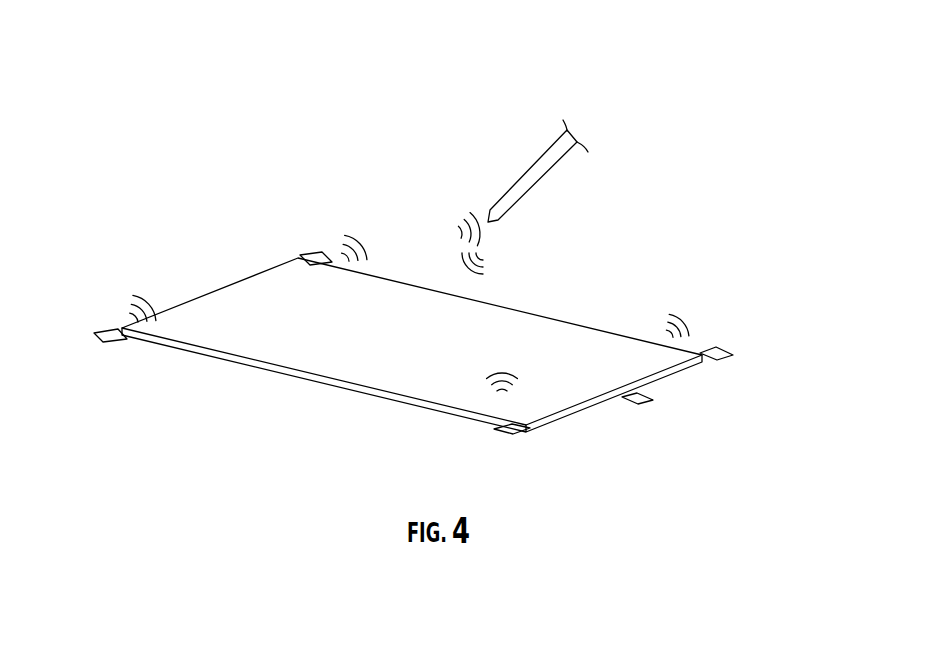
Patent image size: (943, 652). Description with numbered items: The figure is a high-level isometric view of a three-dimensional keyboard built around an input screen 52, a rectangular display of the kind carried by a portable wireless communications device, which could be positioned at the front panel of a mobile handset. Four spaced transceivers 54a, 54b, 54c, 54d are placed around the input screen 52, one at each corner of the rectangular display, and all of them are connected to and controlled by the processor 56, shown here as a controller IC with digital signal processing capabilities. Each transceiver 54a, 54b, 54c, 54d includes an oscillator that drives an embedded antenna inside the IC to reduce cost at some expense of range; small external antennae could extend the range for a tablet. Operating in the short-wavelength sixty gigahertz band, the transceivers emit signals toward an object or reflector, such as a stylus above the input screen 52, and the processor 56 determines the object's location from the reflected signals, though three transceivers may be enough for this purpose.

The input screen 52 is at (527, 330).
The transceiver 54a is at (104, 332).
The transceiver 54b is at (515, 434).
The transceiver 54c is at (717, 347).
The transceiver 54d is at (310, 253).
The processor 56 is at (650, 400).